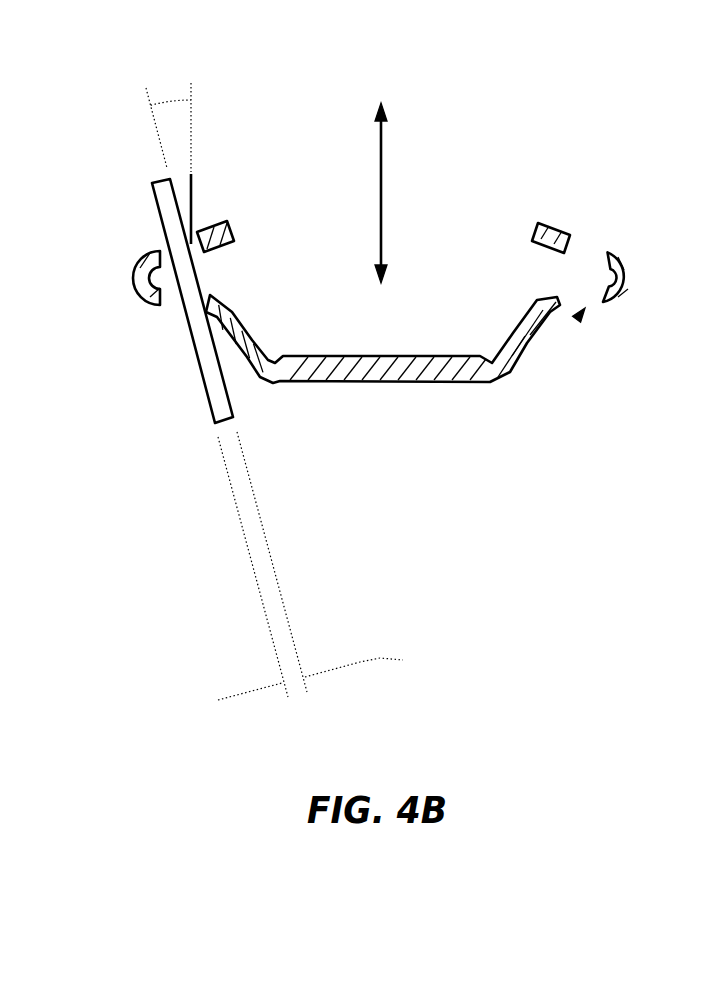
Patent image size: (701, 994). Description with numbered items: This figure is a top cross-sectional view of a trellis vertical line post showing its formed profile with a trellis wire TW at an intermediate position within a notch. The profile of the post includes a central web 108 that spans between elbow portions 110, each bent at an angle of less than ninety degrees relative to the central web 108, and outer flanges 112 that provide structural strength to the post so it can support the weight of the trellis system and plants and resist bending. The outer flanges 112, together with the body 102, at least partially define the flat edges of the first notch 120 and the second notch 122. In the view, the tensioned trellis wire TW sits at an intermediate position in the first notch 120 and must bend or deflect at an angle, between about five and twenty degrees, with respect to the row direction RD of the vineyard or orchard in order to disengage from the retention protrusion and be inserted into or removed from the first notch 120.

The body 102 is at (412, 378).
The central web 108 is at (373, 353).
The elbow portion 110 is at (622, 252).
The outer flange 112 is at (553, 226).
The first notch 120 is at (221, 275).
The second notch 122 is at (577, 319).
The trellis wire TW is at (167, 212).
The row direction RD is at (382, 185).